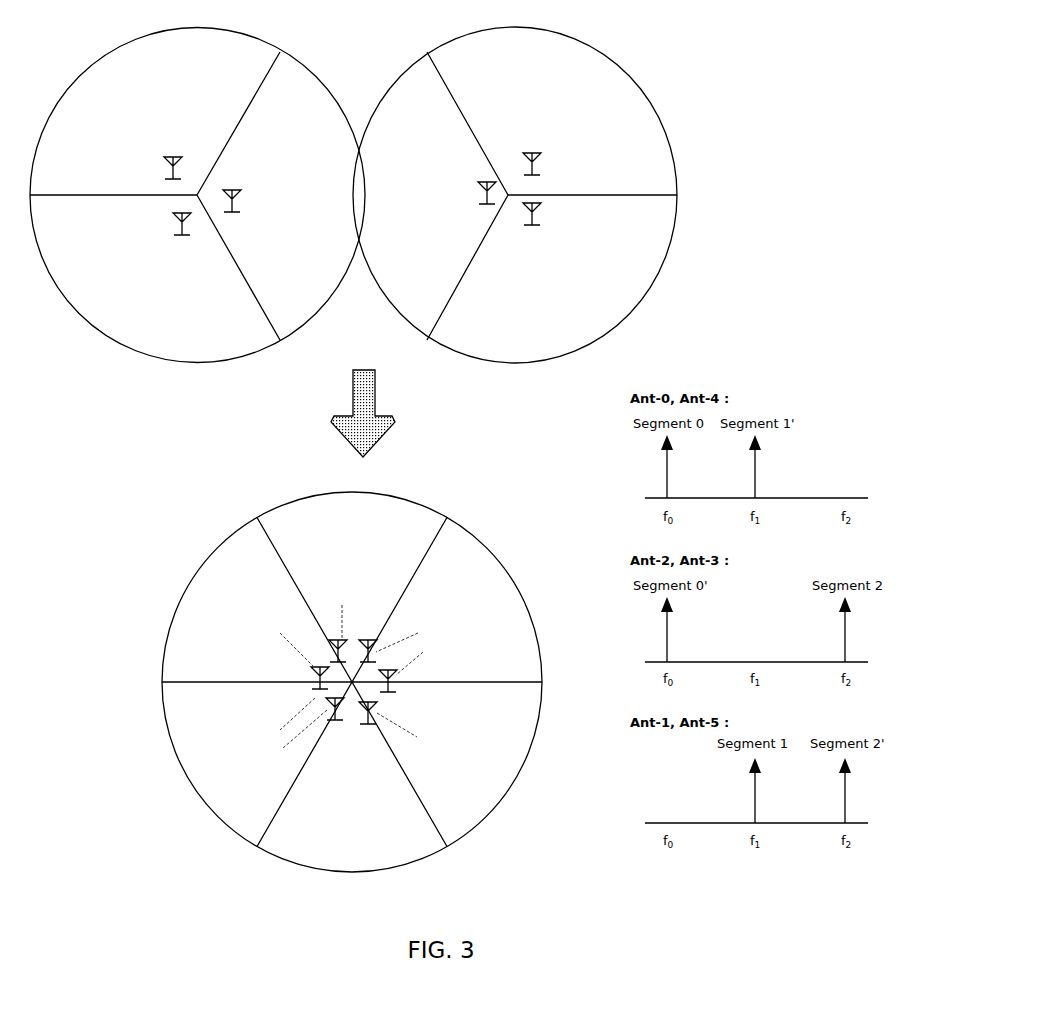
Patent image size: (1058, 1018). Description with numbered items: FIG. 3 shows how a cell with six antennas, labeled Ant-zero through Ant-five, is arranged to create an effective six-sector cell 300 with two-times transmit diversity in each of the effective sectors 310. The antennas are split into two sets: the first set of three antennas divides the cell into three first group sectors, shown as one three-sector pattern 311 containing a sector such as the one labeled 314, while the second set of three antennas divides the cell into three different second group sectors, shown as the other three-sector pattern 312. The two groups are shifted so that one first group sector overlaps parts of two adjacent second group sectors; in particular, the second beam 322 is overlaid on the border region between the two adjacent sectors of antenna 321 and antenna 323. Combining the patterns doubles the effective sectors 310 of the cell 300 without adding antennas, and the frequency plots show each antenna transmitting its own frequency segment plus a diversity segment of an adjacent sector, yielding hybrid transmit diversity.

The 6-sector cell 300 is at (540, 728).
The effective sectors 310 is at (490, 770).
The first cell 311 is at (630, 268).
The second cell 312 is at (307, 123).
The sector of first cell 314 is at (640, 123).
The antenna 321 is at (540, 155).
The second beam 322 is at (237, 198).
The antenna 323 is at (540, 220).